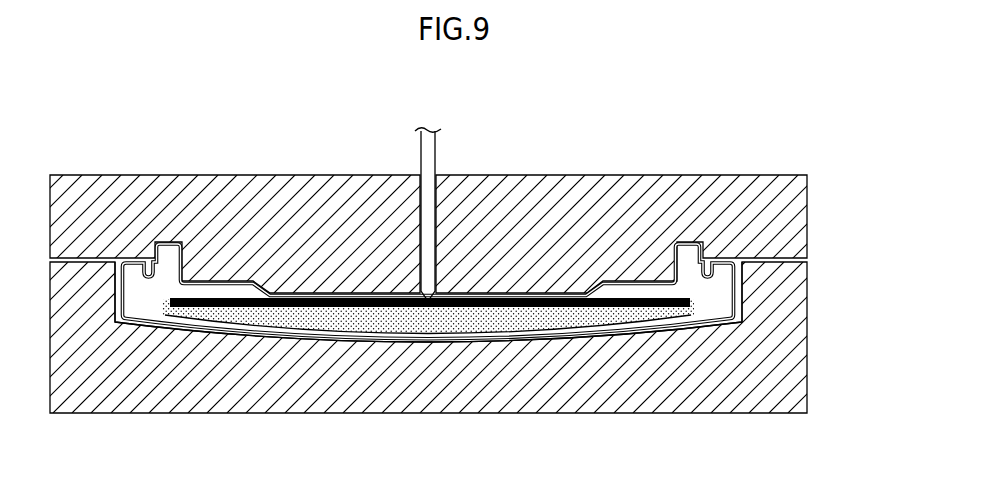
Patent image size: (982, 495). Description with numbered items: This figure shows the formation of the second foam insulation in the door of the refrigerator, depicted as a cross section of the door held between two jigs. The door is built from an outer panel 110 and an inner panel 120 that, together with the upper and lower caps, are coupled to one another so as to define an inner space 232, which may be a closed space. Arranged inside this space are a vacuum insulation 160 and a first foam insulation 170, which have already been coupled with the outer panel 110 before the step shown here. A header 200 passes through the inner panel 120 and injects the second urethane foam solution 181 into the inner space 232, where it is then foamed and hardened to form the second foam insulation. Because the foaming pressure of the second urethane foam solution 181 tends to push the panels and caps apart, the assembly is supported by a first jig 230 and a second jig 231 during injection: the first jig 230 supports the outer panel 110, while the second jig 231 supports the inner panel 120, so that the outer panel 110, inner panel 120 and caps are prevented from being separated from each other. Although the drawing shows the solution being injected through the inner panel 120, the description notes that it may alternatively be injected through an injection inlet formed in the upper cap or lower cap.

The outer panel 110 is at (556, 332).
The inner panel 120 is at (686, 278).
The vacuum insulation 160 is at (357, 307).
The first foam insulation 170 is at (466, 323).
The second urethane foam solution 181 is at (243, 307).
The header 200 is at (420, 141).
The first jig 230 is at (694, 392).
The second jig 231 is at (790, 212).
The inner space 232 is at (157, 292).